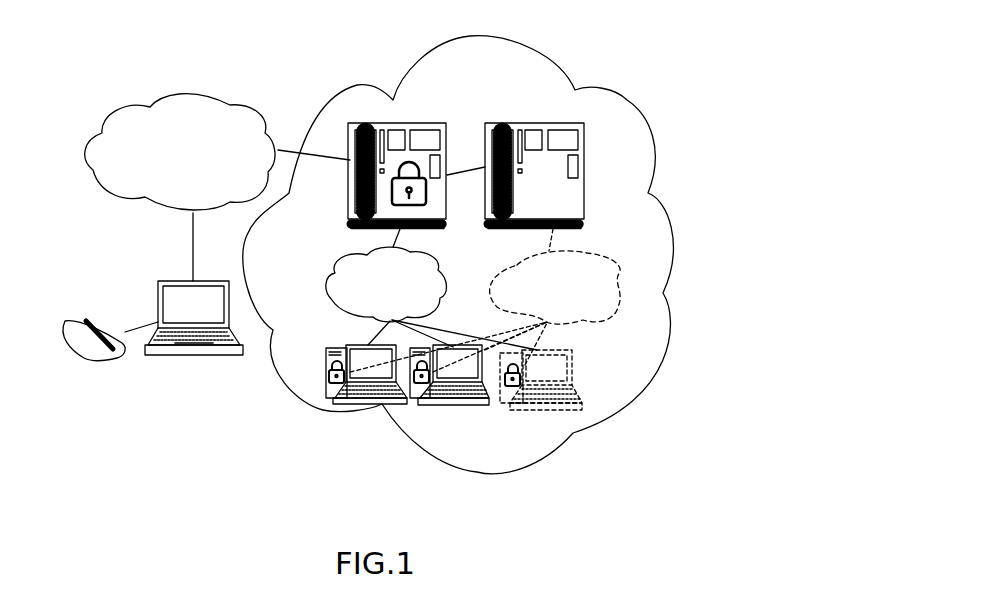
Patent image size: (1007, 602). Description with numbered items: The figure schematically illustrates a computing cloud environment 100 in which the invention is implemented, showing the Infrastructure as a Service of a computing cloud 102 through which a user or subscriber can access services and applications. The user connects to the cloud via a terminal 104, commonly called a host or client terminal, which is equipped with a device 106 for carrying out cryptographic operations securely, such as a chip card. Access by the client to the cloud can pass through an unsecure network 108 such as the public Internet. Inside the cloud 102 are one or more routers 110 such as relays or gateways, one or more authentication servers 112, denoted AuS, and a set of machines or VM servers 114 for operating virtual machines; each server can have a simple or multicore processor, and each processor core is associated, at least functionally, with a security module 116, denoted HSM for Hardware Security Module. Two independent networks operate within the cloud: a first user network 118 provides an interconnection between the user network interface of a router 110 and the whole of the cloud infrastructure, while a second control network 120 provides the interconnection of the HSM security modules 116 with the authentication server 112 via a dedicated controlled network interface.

The system 100 is at (291, 30).
The computing cloud 102 is at (417, 63).
The terminal 104 is at (167, 356).
The device for carrying out cryptographic operations 106 is at (93, 361).
The unsecure network 108 is at (180, 91).
The router 110 is at (405, 123).
The authentication server 112 is at (502, 123).
The VM server 114 is at (382, 404).
The security module 116 is at (548, 412).
The first user network 118 is at (337, 276).
The second control network 120 is at (614, 297).